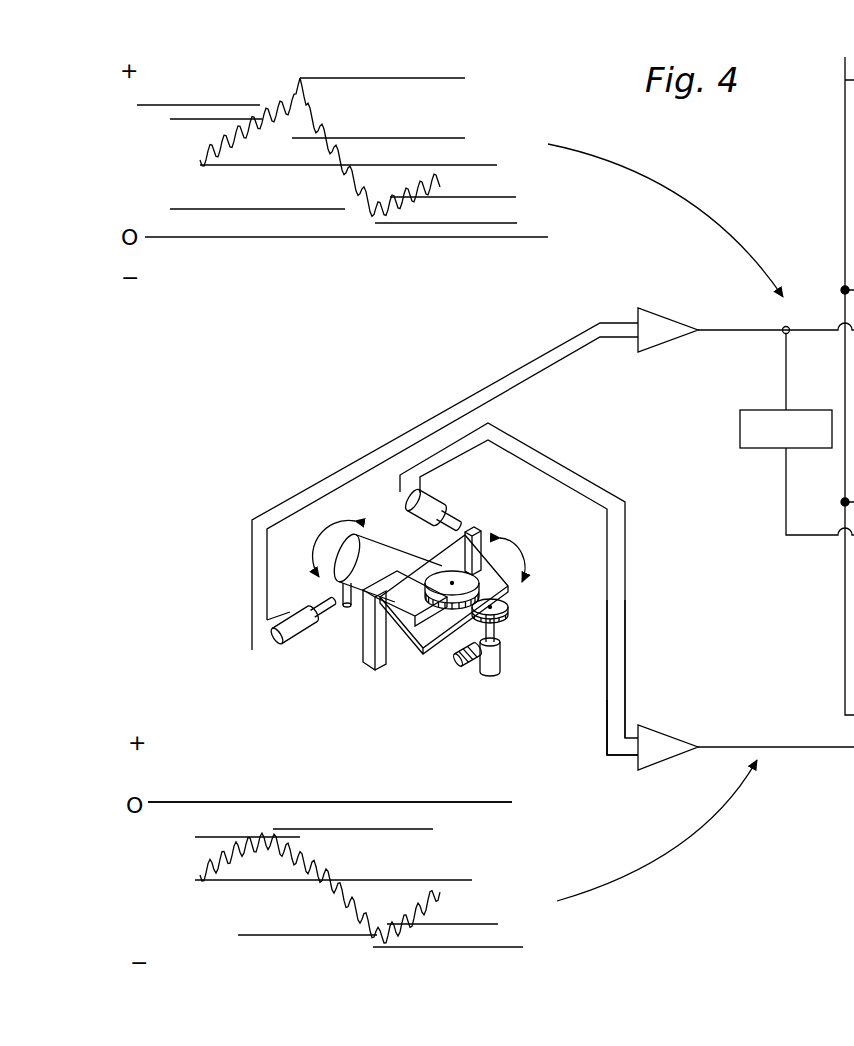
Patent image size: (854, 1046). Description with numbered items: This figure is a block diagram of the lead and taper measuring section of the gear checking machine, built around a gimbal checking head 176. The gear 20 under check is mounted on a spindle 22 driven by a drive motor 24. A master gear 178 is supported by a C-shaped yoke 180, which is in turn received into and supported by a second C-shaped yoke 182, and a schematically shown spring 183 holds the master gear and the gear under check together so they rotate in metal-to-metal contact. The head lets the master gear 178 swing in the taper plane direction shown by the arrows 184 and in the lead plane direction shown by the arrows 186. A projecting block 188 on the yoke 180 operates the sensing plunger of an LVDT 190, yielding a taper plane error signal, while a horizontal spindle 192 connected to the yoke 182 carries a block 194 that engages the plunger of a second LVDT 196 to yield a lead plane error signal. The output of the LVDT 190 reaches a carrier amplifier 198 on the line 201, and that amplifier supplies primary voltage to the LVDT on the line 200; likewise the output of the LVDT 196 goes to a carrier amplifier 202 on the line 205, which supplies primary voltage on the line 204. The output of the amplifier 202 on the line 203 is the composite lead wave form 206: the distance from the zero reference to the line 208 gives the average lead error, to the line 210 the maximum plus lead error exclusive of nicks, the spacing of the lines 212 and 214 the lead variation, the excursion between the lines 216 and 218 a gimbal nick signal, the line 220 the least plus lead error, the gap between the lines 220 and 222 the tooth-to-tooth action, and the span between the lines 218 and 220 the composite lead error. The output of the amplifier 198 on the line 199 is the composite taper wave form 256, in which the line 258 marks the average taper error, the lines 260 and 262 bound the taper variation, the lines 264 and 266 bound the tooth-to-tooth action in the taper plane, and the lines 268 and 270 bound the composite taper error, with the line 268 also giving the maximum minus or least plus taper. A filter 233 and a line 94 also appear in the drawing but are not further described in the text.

The gear 20 is at (497, 605).
The spindle 22 is at (498, 633).
The drive motor 24 is at (500, 651).
The supply line 94 is at (845, 548).
The gimbal checking head 176 is at (414, 598).
The master gear 178 is at (440, 578).
The C-shaped yoke 180 is at (437, 647).
The second C-shaped yoke 182 is at (397, 633).
The spring 183 is at (465, 663).
The arrows 184 is at (528, 560).
The arrows 186 is at (322, 532).
The projecting block 188 is at (480, 528).
The LVDT 190 is at (437, 494).
The horizontal spindle 192 is at (365, 545).
The block 194 is at (340, 592).
The LVDT 196 is at (303, 628).
The carrier amplifier 198 is at (665, 752).
The line 199 is at (720, 747).
The line 200 is at (607, 742).
The line 201 is at (625, 660).
The carrier amplifier 202 is at (668, 337).
The line 203 is at (731, 328).
The line 204 is at (540, 377).
The line 205 is at (447, 403).
The composite wave form signal 206 is at (507, 104).
The line 208 is at (292, 166).
The line 210 is at (168, 105).
The line 212 is at (199, 209).
The line 214 is at (186, 119).
The line 216 is at (415, 138).
The line 218 is at (380, 78).
The line 220 is at (498, 223).
The line 222 is at (490, 197).
The filter 233 is at (767, 410).
The composite wave form 256 is at (218, 797).
The line 258 is at (385, 880).
The line 260 is at (262, 935).
The line 262 is at (212, 837).
The line 264 is at (505, 947).
The line 266 is at (463, 924).
The line 268 is at (348, 802).
The line 270 is at (415, 829).